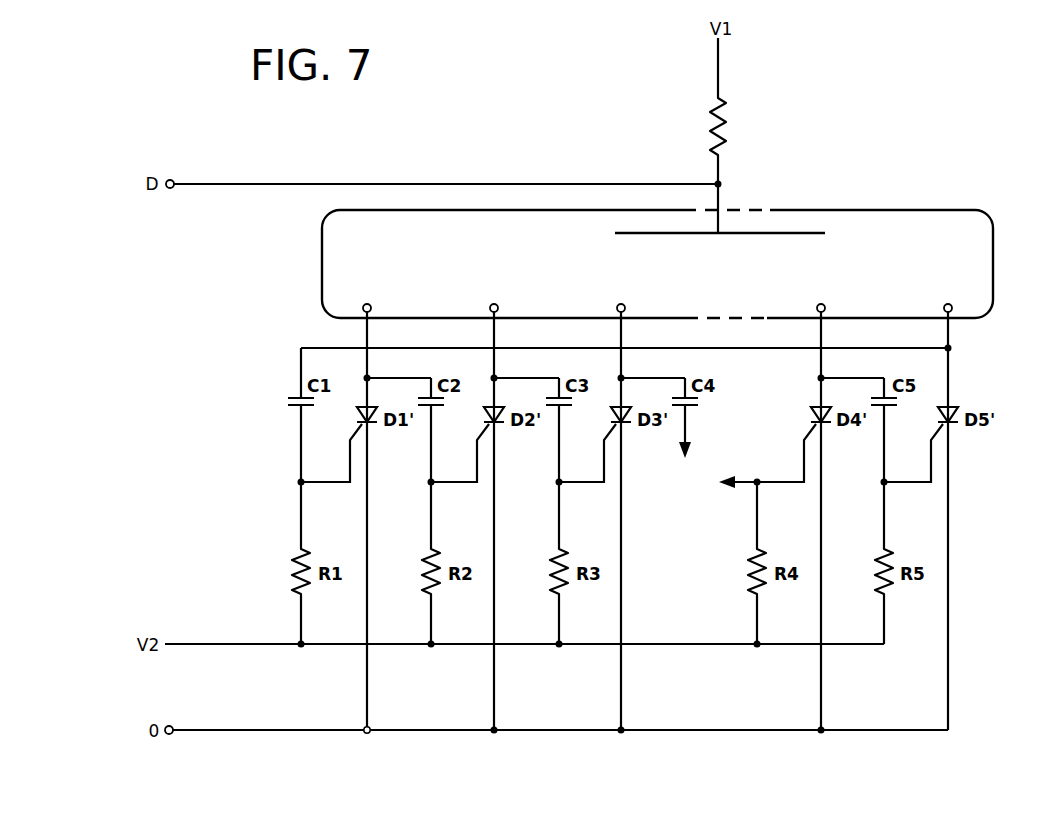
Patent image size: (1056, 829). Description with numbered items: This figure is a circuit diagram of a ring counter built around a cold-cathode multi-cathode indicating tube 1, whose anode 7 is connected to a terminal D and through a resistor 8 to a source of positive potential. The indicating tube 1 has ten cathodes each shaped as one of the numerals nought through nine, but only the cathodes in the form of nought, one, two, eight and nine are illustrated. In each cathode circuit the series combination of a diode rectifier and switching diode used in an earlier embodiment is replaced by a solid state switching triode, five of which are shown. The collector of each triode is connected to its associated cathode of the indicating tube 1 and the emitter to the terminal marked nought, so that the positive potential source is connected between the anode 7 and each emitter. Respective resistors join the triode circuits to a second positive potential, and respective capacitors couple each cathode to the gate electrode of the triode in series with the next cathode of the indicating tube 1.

The cold-cathode multi-cathode indicating tube 1 is at (992, 253).
The anode 7 is at (775, 233).
The resistor 8 is at (722, 128).